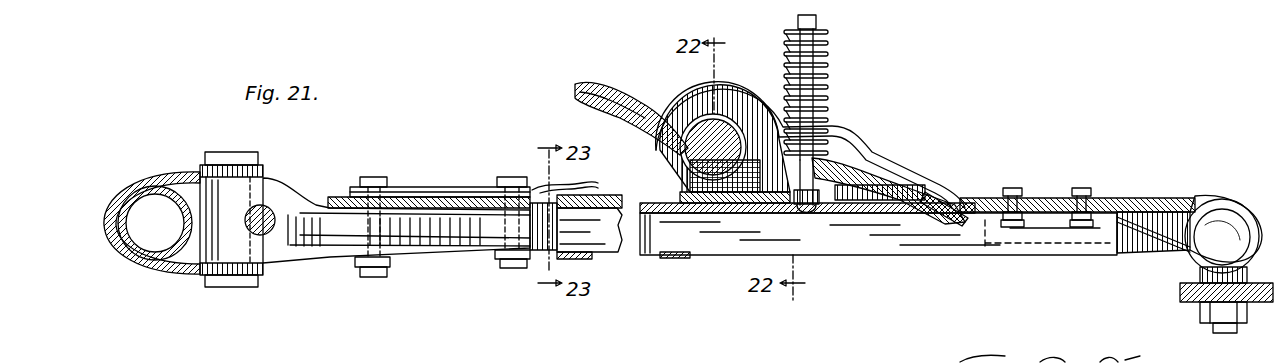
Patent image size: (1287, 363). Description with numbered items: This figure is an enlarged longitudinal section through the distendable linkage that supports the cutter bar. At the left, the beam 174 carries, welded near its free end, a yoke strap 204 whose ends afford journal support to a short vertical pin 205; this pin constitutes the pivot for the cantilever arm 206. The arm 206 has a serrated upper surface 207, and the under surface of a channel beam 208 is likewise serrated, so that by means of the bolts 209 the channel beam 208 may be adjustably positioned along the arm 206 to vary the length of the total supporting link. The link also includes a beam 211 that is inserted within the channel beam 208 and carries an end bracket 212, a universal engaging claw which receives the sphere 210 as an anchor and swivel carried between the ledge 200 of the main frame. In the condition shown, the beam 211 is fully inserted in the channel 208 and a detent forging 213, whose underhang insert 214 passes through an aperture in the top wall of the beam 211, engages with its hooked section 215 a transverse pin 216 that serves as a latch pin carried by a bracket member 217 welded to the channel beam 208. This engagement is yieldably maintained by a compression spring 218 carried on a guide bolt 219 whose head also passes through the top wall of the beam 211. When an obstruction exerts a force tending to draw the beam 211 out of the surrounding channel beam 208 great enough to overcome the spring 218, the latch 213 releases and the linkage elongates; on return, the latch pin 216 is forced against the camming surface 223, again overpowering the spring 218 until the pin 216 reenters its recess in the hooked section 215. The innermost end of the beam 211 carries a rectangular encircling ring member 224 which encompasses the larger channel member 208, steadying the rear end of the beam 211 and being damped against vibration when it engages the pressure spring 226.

The beam 174 is at (133, 233).
The ledge 200 is at (1180, 293).
The yoke strap 204 is at (163, 178).
The short vertical pin 205 is at (238, 153).
The cantilever arm 206 is at (288, 240).
The serrated upper surface 207 is at (340, 198).
The channel beam 208 is at (437, 198).
The bolts 209 is at (373, 178).
The sphere 210 is at (1221, 220).
The beam 211 is at (828, 240).
The end bracket 212 is at (1107, 197).
The detent forging 213 is at (875, 163).
The underhang insert 214 is at (947, 225).
The hooked section 215 is at (716, 128).
The transverse pin 216 is at (692, 160).
The bracket member 217 is at (742, 180).
The compression spring 218 is at (825, 92).
The guide bolt 219 is at (822, 177).
The camming surface 223 is at (578, 105).
The ring member 224 is at (583, 259).
The pressure spring 226 is at (572, 186).